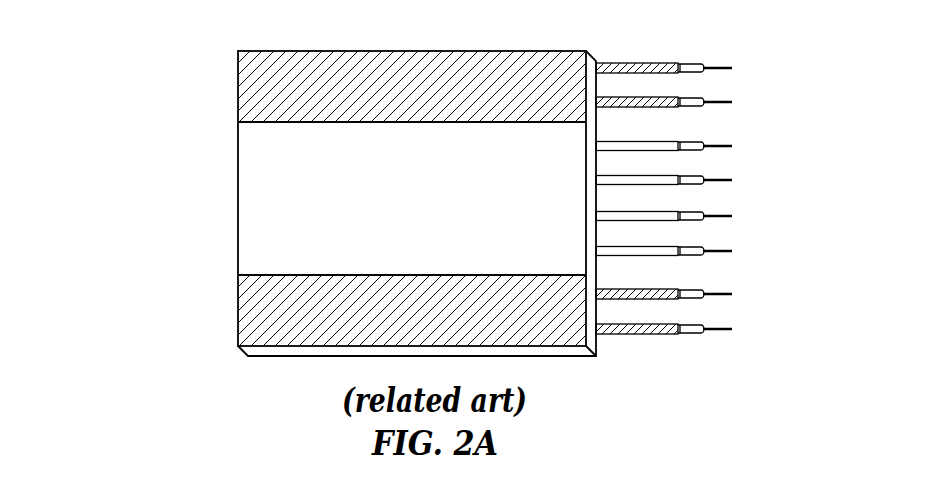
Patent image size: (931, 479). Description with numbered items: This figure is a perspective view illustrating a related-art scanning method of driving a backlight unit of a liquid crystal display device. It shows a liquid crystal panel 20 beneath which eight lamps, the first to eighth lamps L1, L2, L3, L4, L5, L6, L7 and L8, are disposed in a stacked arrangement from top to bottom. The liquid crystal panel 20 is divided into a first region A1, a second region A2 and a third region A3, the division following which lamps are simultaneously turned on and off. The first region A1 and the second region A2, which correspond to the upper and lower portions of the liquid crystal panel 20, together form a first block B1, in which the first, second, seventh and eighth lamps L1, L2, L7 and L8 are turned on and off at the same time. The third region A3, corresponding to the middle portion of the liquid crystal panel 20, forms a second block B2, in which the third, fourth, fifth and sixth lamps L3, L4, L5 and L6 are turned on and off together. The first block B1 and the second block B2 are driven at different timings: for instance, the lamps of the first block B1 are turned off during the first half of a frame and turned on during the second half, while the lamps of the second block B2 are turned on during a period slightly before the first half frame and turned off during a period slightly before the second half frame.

The liquid crystal panel 20 is at (238, 74).
The first region A1 is at (412, 86).
The second region A2 is at (412, 310).
The third region A3 is at (412, 198).
The first block B1 is at (238, 312).
The second block B2 is at (255, 202).
The first lamp L1 is at (640, 63).
The second lamp L2 is at (650, 97).
The third lamp L3 is at (650, 141).
The fourth lamp L4 is at (650, 175).
The fifth lamp L5 is at (650, 211).
The sixth lamp L6 is at (650, 246).
The seventh lamp L7 is at (650, 289).
The eighth lamp L8 is at (650, 324).